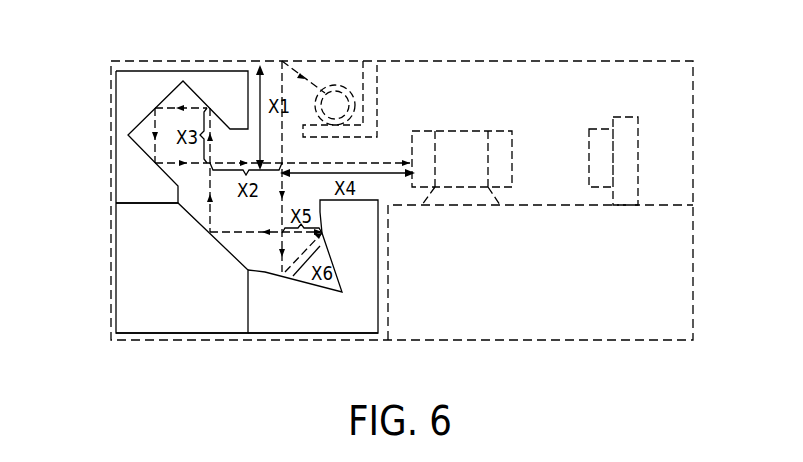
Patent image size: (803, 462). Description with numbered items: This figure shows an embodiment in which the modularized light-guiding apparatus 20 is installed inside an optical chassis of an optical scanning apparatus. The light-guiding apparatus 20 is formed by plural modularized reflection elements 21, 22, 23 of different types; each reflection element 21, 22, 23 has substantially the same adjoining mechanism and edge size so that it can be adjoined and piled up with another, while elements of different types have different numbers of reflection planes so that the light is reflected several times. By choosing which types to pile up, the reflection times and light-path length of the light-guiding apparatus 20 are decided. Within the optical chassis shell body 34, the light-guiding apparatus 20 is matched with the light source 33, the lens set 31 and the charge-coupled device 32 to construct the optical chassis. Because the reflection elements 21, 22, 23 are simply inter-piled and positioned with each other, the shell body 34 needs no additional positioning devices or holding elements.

The modularized light-guiding apparatus 20 is at (92, 280).
The reflection element 21 is at (177, 320).
The reflection element 22 is at (313, 323).
The reflection element 23 is at (134, 70).
The lens set 31 is at (460, 140).
The charge-coupled device 32 is at (600, 137).
The light source 33 is at (327, 92).
The optical chassis shell body 34 is at (693, 118).